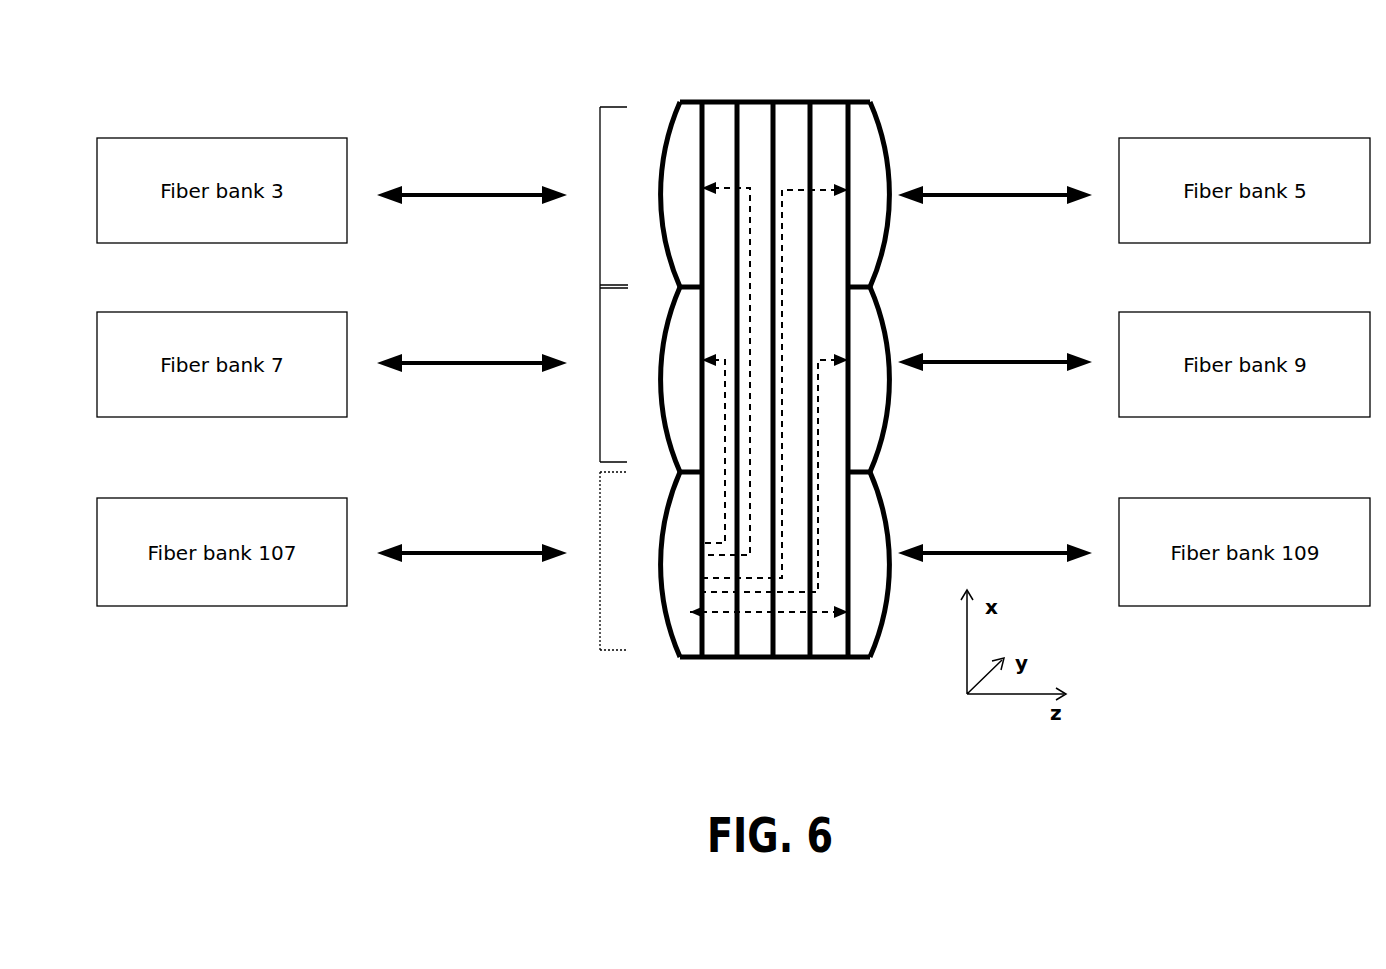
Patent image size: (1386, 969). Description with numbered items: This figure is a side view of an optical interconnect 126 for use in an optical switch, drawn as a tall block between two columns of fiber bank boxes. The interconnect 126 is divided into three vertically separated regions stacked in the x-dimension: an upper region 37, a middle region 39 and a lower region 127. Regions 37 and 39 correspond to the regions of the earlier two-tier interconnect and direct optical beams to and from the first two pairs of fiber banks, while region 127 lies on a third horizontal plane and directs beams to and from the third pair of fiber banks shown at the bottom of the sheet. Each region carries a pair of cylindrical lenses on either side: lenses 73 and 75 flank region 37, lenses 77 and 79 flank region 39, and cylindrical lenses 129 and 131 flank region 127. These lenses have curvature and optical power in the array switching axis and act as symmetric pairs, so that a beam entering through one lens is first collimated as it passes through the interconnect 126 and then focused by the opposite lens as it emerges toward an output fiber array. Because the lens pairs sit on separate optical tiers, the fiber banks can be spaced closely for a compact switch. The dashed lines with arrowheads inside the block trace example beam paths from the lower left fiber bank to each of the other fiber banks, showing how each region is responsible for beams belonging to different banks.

The upper region 37 is at (600, 163).
The lower region 39 is at (600, 322).
The lower region 127 is at (600, 492).
The interconnect 126 is at (762, 102).
The lens 73 is at (675, 140).
The lens 75 is at (860, 140).
The lens 77 is at (675, 345).
The lens 79 is at (860, 335).
The cylindrical lens 129 is at (677, 527).
The cylindrical lens 131 is at (862, 525).